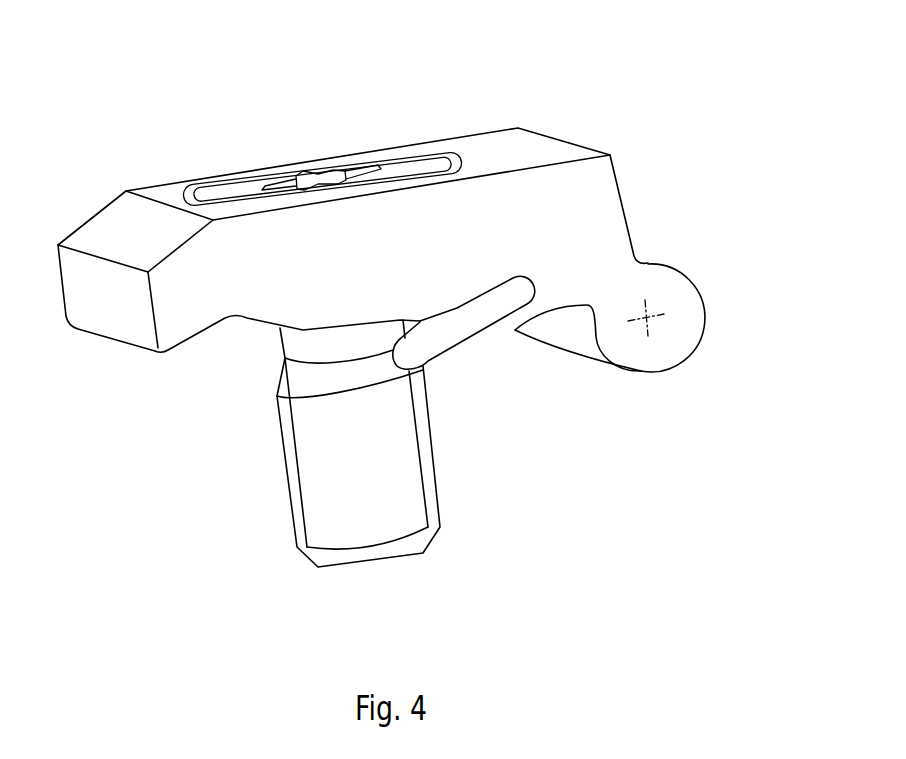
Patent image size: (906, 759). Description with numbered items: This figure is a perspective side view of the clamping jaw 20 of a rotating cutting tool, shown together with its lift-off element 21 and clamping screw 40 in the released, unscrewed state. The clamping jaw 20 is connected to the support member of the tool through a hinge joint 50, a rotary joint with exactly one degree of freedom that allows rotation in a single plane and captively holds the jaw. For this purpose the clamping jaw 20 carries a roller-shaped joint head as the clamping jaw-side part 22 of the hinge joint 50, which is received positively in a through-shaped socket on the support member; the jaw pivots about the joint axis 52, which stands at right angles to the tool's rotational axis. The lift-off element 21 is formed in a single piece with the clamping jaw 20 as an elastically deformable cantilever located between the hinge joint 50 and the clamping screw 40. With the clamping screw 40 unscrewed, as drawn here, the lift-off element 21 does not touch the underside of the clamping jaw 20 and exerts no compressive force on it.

The clamping jaw 20 is at (490, 147).
The lift-off element 21 is at (441, 354).
The clamping jaw-side part 22 is at (657, 372).
The clamping screw 40 is at (238, 193).
The hinge joint 50 is at (686, 270).
The joint axis 52 is at (646, 318).